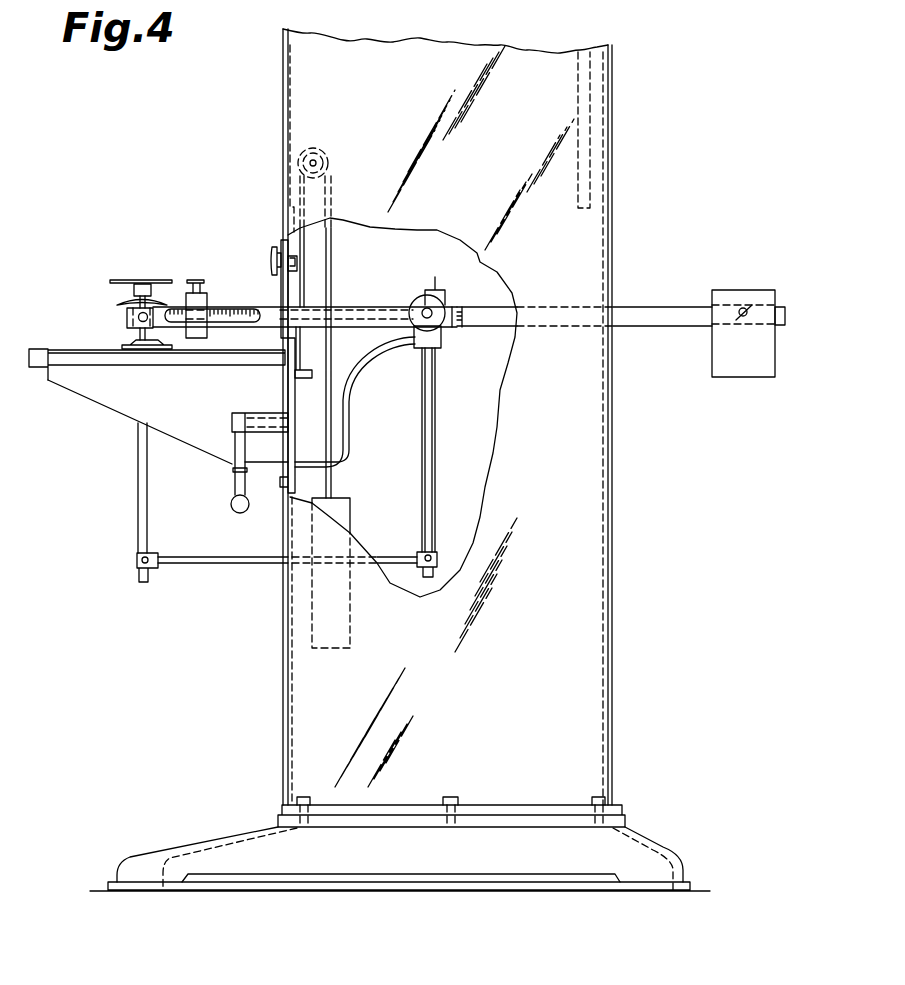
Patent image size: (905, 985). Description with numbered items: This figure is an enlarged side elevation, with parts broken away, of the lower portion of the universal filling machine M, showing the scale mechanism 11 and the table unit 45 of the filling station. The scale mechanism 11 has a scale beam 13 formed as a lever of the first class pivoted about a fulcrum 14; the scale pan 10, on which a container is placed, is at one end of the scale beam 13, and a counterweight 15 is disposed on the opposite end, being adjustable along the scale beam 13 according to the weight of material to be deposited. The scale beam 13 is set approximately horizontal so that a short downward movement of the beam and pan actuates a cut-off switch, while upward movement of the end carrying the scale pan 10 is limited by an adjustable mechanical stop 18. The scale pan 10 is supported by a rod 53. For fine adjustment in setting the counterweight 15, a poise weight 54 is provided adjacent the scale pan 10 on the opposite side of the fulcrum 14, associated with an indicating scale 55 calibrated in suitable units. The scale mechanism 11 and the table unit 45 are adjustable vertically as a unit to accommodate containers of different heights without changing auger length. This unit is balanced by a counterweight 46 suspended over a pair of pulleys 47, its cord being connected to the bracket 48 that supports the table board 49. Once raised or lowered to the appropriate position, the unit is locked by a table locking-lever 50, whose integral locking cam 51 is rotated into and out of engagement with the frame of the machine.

The universal filling machine M is at (650, 193).
The scale pan 10 is at (160, 278).
The scale mechanism 11 is at (352, 398).
The scale beam 13 is at (633, 308).
The fulcrum 14 is at (431, 310).
The counterweight 15 is at (745, 370).
The adjustable mechanical stop 18 is at (300, 263).
The table unit 45 is at (105, 440).
The counterweight 46 is at (350, 515).
The pulley 47 is at (332, 150).
The bracket 48 is at (182, 441).
The table board 49 is at (33, 370).
The table locking-lever 50 is at (237, 487).
The locking cam 51 is at (293, 428).
The rod 53 is at (140, 497).
The poise weight 54 is at (202, 292).
The indicating scale 55 is at (220, 308).